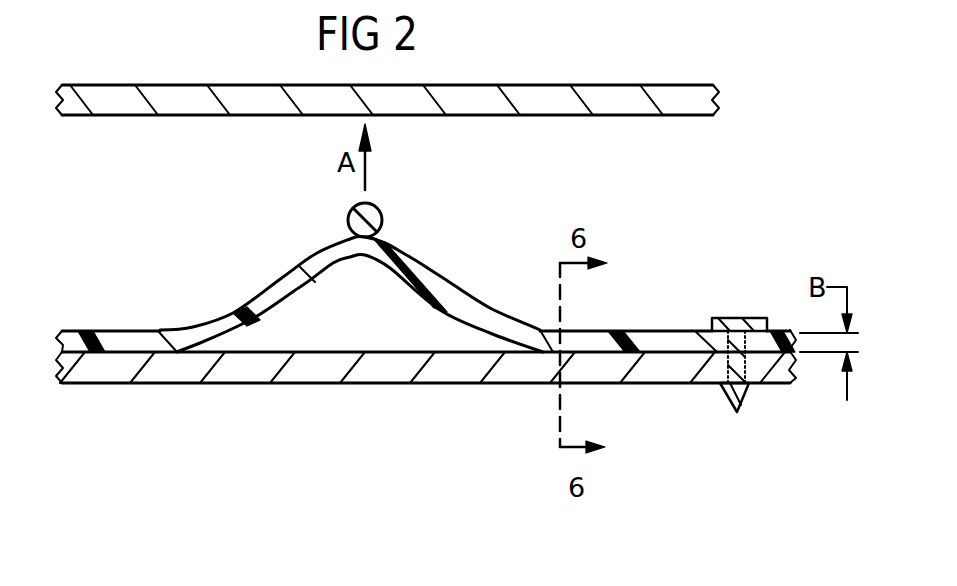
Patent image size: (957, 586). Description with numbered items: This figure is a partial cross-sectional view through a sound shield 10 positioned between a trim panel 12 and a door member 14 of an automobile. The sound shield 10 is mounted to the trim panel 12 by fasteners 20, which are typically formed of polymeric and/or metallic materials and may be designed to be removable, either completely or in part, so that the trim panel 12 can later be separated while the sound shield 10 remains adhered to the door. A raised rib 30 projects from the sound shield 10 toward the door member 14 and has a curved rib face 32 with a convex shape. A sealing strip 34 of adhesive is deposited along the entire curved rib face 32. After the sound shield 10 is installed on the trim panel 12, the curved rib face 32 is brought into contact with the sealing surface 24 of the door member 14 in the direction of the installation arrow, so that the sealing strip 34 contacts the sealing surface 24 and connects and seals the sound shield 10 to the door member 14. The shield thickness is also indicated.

The sound shield 10 is at (580, 337).
The trim panel 12 is at (245, 370).
The door member 14 is at (600, 115).
The fasteners 20 is at (740, 318).
The sealing surface 24 is at (209, 128).
The raised rib 30 is at (440, 310).
The curved rib face 32 is at (410, 257).
The sealing strip 34 is at (378, 218).